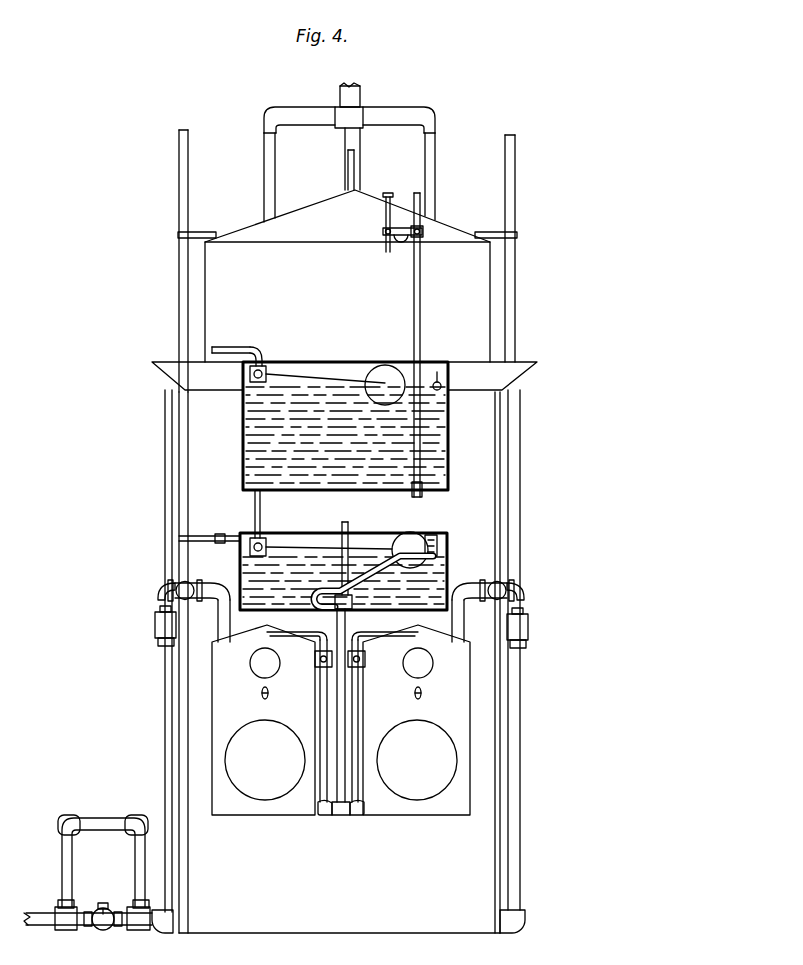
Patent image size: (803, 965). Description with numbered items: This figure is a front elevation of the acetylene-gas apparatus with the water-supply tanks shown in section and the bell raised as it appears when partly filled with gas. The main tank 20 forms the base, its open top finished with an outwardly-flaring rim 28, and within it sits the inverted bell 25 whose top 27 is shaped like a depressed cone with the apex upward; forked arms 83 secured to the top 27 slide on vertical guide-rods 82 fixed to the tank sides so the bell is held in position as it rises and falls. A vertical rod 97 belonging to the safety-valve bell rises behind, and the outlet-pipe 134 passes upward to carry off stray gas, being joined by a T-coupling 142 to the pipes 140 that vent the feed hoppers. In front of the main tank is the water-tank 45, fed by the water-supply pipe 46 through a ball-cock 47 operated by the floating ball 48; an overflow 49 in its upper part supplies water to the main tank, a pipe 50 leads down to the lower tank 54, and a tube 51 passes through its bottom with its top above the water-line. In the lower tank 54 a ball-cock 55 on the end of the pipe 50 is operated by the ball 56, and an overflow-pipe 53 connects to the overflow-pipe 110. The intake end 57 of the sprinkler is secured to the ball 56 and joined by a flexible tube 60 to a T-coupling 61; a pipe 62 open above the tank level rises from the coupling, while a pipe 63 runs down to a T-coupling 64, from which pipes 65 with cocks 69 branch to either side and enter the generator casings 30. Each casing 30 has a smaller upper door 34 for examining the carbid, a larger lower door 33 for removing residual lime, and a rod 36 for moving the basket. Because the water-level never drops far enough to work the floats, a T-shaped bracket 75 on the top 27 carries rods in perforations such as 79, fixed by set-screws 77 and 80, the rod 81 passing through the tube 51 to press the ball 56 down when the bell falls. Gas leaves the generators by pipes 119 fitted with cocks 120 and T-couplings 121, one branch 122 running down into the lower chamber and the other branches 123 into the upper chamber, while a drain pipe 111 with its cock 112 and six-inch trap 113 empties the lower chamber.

The main tank 20 is at (339, 894).
The bell 25 is at (347, 302).
The top of bell 27 is at (347, 216).
The outwardly-flaring rim 28 is at (505, 380).
The generator casing 30 is at (341, 720).
The lower door 33 is at (341, 760).
The upper door 34 is at (341, 663).
The rod 36 is at (270, 692).
The water-tank 45 is at (450, 435).
The water-supply pipe 46 is at (240, 347).
The ball-cock 47 is at (264, 370).
The floating ball 48 is at (385, 365).
The overflow 49 is at (438, 381).
The pipe 50 is at (261, 509).
The tube 51 is at (423, 484).
The overflow-pipe 53 is at (205, 536).
The lower tank 54 is at (449, 560).
The ball-cock 55 is at (266, 542).
The ball 56 is at (405, 534).
The intake-pipe end 57 is at (437, 540).
The flexible tube 60 is at (362, 580).
The T-coupling 61 is at (350, 605).
The pipe 62 is at (342, 528).
The pipe 63 is at (346, 704).
The T-coupling 64 is at (339, 816).
The pipes 65 is at (320, 702).
The cocks 69 is at (315, 658).
The T-shaped bracket 75 is at (400, 245).
The set-screw 77 is at (383, 232).
The perforation 79 is at (390, 194).
The set-screw 80 is at (422, 238).
The rod 81 is at (421, 291).
The guide-rods 82 is at (190, 158).
The forked arms 83 is at (198, 232).
The vertical rod 97 is at (355, 160).
The overflow-pipe 110 is at (179, 499).
The drain pipe 111 is at (35, 912).
The cock 112 is at (105, 906).
The trap 113 is at (100, 818).
The gas pipes 119 is at (218, 626).
The cock 120 is at (188, 582).
The T-coupling 121 is at (155, 626).
The branch 122 is at (165, 725).
The branches 123 is at (160, 645).
The outlet-pipe 134 is at (345, 146).
The pipe 140 is at (265, 162).
The T-coupling 142 is at (356, 118).